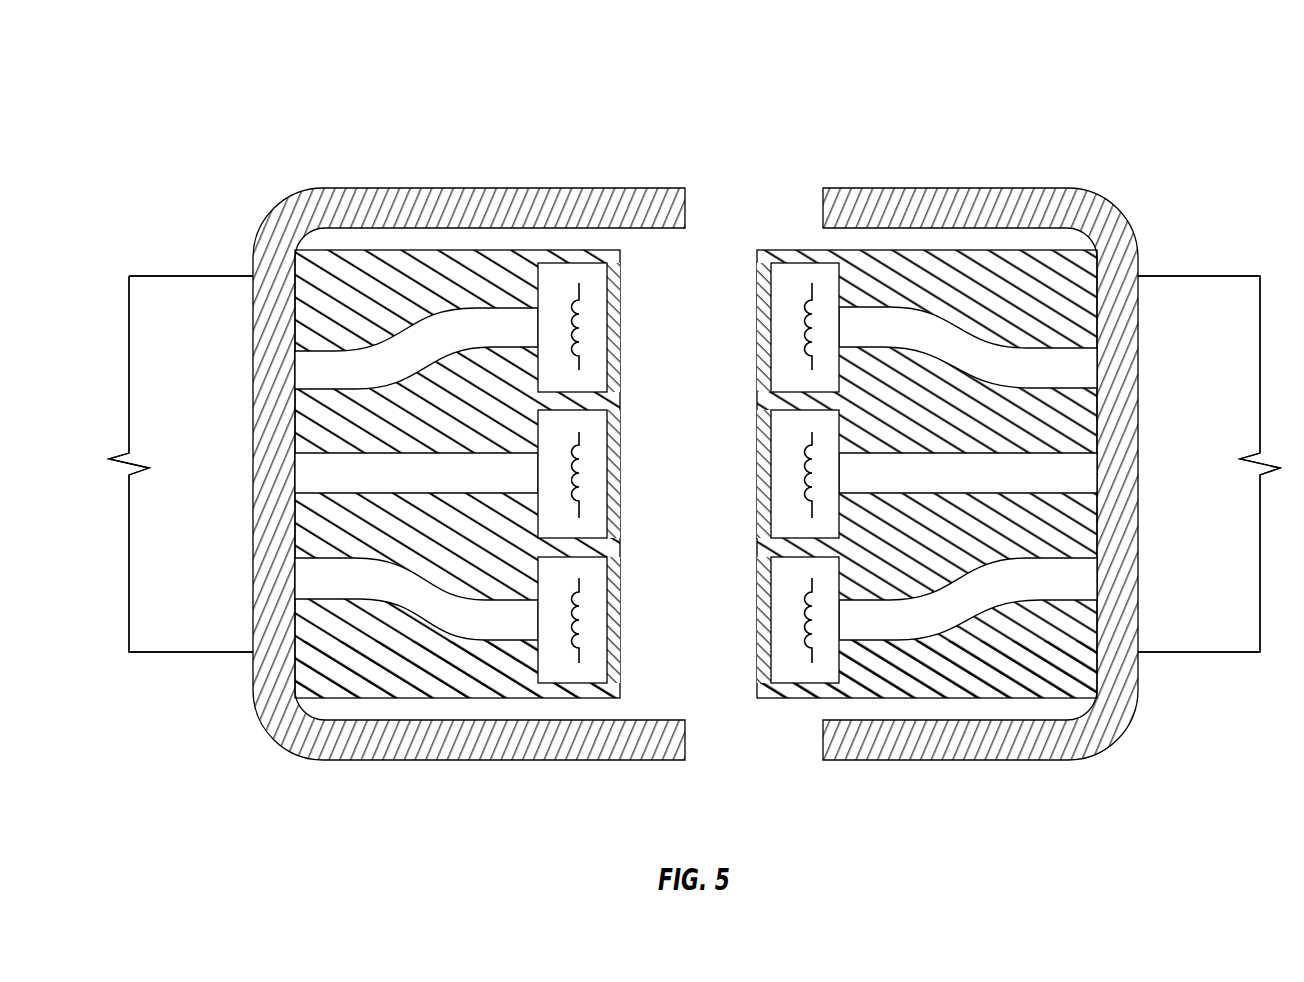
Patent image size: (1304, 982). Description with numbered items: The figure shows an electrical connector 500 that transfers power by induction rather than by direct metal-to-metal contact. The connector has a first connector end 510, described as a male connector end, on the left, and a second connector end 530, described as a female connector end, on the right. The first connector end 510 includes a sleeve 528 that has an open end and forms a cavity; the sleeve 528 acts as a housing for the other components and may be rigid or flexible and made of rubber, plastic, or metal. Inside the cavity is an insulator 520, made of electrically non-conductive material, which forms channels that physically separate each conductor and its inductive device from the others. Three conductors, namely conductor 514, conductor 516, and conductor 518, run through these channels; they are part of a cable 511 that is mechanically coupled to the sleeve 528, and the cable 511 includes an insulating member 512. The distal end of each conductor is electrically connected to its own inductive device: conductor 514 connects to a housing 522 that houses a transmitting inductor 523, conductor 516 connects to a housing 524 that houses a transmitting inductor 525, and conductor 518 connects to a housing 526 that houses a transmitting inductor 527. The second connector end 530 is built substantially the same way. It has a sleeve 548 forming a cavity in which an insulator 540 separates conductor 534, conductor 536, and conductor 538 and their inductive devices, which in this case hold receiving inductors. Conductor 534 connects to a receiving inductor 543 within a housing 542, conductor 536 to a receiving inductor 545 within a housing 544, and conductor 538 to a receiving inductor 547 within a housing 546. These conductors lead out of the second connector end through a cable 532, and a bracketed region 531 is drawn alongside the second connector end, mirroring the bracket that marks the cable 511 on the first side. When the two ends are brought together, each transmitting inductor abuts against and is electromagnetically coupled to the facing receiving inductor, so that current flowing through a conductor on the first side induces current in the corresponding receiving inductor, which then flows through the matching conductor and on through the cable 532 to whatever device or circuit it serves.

The electrical connector 500 is at (1166, 71).
The first connector end 510 is at (496, 164).
The cable 511 is at (174, 257).
The insulating member 512 is at (205, 476).
The conductor 514 is at (300, 372).
The conductor 516 is at (300, 474).
The conductor 518 is at (300, 578).
The insulator 520 is at (300, 663).
The housing 522 is at (608, 285).
The transmitting inductor 523 is at (580, 327).
The housing 524 is at (608, 441).
The transmitting inductor 525 is at (580, 482).
The housing 526 is at (608, 592).
The transmitting inductor 527 is at (580, 632).
The sleeve 528 is at (474, 744).
The second connector end 530 is at (951, 164).
The second connector 531 is at (1216, 257).
The cable 532 is at (1223, 472).
The conductor 534 is at (1092, 372).
The conductor 536 is at (1092, 474).
The conductor 538 is at (1092, 578).
The insulator 540 is at (1092, 663).
The housing 542 is at (771, 287).
The receiving inductor 543 is at (798, 336).
The housing 544 is at (771, 432).
The receiving inductor 545 is at (800, 482).
The housing 546 is at (771, 578).
The receiving inductor 547 is at (800, 628).
The sleeve 548 is at (975, 744).